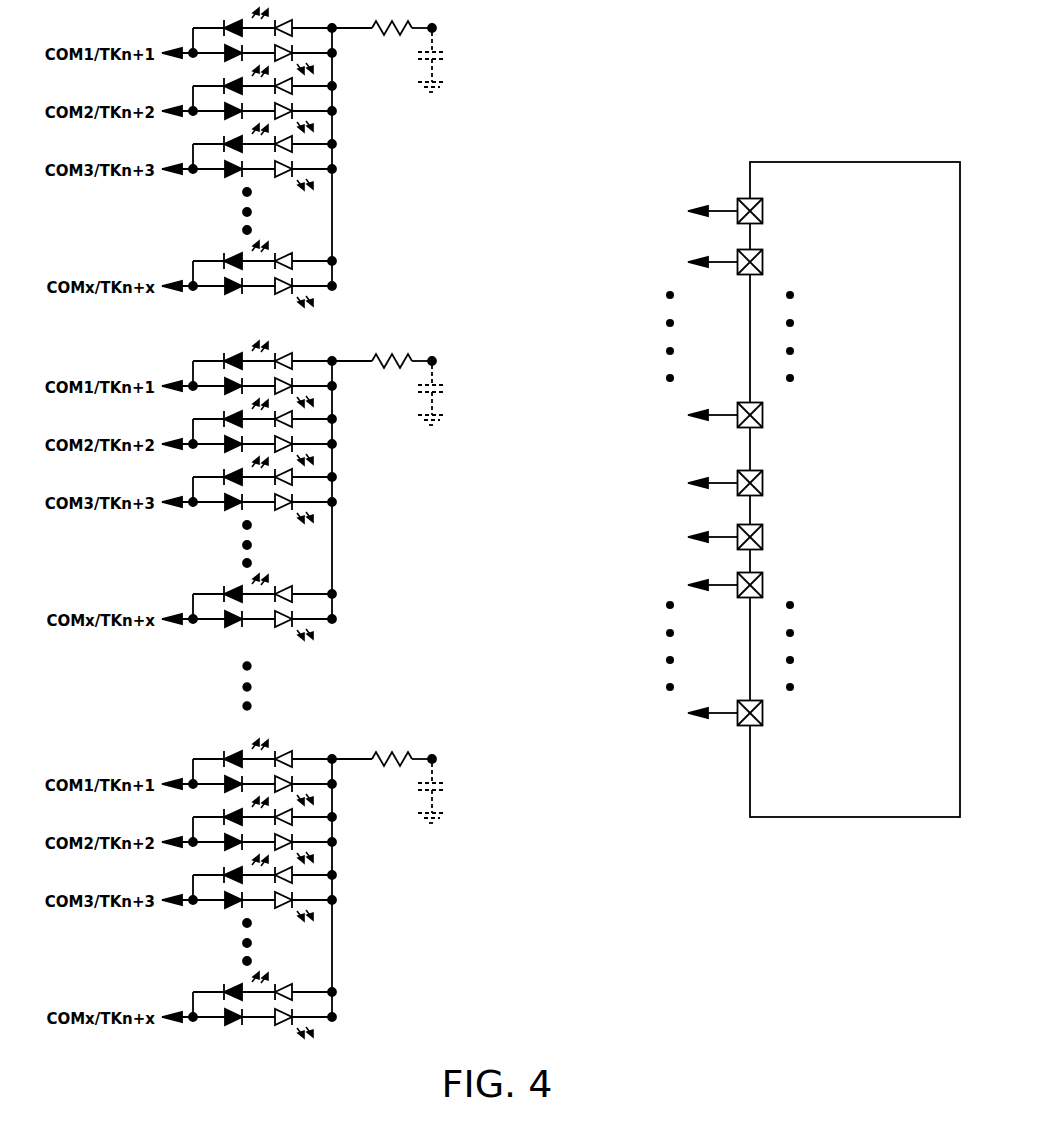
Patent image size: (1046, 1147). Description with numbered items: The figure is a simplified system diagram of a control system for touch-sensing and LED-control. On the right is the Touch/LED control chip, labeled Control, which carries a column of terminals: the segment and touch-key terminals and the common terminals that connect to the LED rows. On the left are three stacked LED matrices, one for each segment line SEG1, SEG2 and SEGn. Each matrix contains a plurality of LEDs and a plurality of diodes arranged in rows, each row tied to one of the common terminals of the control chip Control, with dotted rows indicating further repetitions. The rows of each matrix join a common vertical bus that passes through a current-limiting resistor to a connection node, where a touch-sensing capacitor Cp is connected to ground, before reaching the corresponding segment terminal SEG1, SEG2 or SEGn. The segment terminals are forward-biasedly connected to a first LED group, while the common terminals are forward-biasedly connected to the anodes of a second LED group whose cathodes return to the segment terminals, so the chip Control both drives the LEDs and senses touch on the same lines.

The SEG1/TK1 terminal SEG1 is at (318, 157).
The SEG2/TK2 terminal SEG2 is at (318, 490).
The SEGn/TKn terminal SEGn is at (318, 888).
The touch-sensing capacitor Cp is at (444, 427).
The control chip Control is at (768, 489).